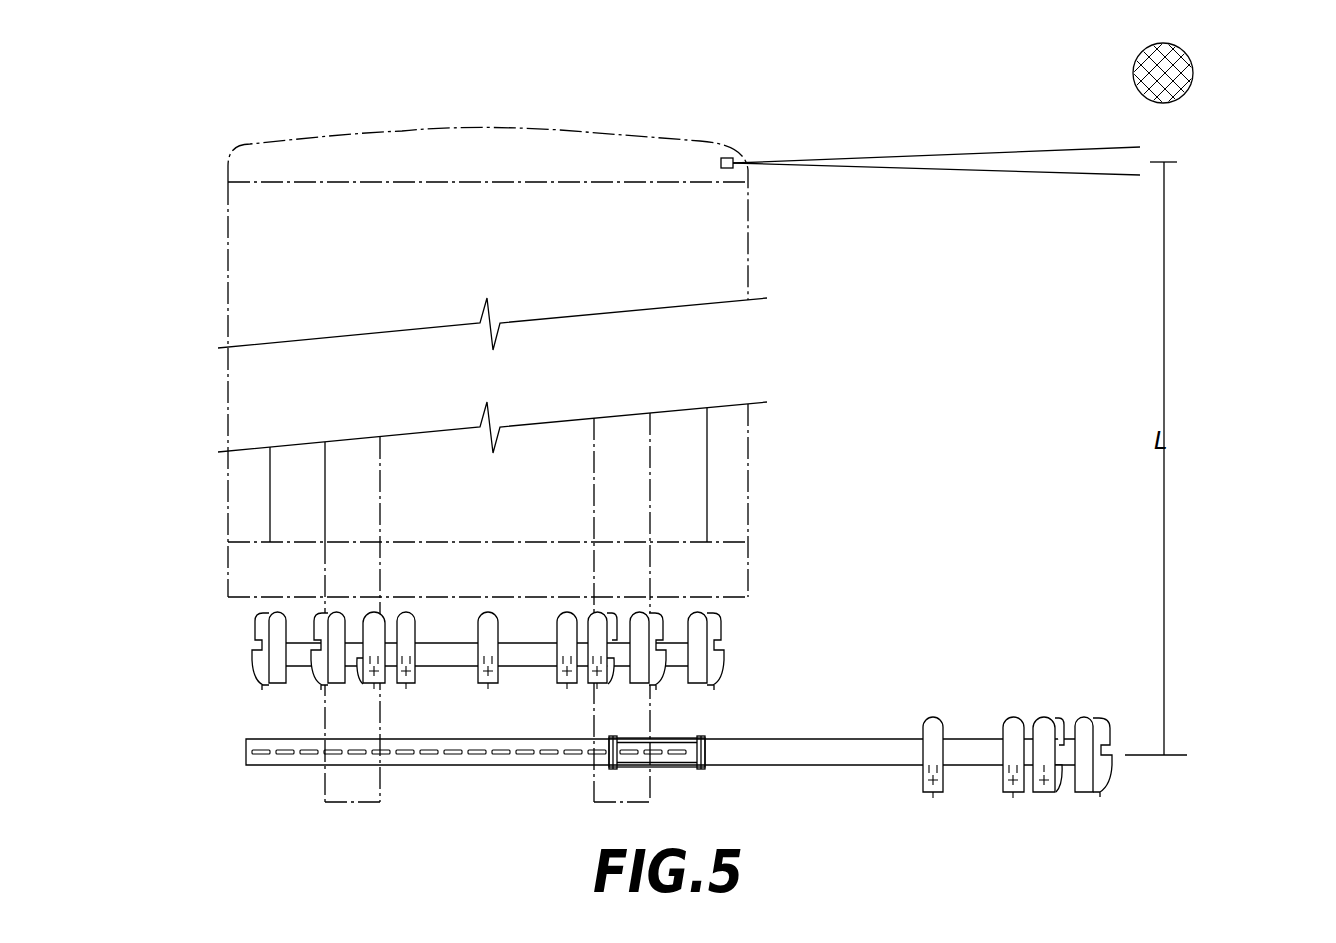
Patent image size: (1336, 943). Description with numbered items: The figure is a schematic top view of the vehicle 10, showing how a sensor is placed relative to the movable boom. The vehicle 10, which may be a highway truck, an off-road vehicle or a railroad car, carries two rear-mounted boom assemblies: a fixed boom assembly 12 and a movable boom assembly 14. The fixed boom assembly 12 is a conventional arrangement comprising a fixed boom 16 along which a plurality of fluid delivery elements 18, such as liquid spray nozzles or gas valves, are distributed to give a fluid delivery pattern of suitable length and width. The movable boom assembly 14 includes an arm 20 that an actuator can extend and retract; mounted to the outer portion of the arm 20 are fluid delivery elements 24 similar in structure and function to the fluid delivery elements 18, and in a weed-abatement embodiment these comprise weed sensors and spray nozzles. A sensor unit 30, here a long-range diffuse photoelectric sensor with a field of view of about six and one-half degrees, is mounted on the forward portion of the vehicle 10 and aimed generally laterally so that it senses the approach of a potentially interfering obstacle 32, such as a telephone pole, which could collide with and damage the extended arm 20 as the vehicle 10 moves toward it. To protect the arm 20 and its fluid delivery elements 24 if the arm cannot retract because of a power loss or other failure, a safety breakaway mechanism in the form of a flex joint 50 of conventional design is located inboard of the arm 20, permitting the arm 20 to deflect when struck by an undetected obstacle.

The vehicle 10 is at (402, 130).
The fixed boom assembly 12 is at (535, 587).
The movable boom assembly 14 is at (679, 713).
The fixed boom 16 is at (517, 643).
The fluid delivery elements 18 is at (277, 612).
The arm 20 is at (857, 752).
The fluid delivery elements 24 is at (934, 717).
The sensor unit 30 is at (733, 158).
The obstacle 32 is at (1190, 58).
The flex joint 50 is at (682, 739).